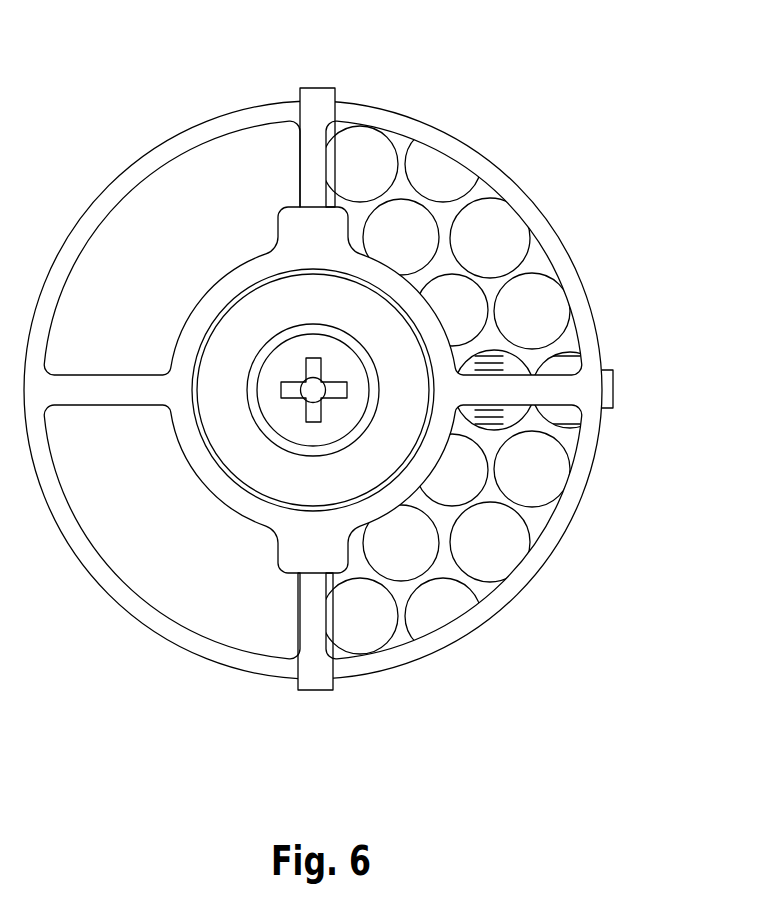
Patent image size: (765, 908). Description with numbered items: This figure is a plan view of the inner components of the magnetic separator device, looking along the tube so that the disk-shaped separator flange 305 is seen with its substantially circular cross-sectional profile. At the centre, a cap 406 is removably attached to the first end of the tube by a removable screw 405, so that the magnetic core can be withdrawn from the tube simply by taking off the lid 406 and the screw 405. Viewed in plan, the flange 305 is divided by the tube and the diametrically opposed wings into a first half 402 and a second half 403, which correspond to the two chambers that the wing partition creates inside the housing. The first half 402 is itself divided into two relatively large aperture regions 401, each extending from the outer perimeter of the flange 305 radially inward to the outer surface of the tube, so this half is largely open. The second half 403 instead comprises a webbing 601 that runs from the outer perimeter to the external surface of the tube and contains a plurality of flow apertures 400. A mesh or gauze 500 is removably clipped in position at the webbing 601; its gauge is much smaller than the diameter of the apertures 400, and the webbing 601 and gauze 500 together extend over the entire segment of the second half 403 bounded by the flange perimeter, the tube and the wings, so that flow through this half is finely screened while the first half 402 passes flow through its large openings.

The aperture regions 401 is at (238, 155).
The first half 402 is at (107, 187).
The second half 403 is at (527, 192).
The flow apertures 400 is at (525, 313).
The mesh or gauze 500 is at (528, 457).
The webbing 601 is at (532, 520).
The removable screw 405 is at (272, 397).
The cap 406 is at (263, 460).
The separator flange 305 is at (447, 647).